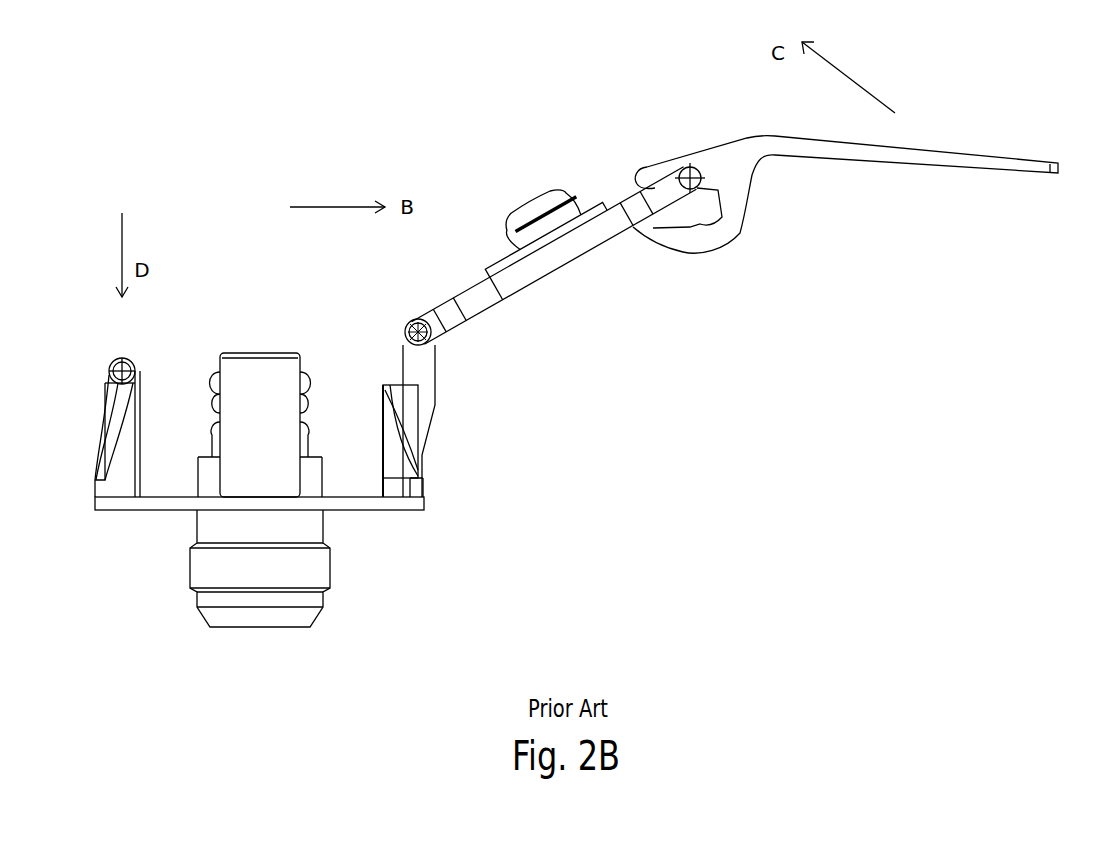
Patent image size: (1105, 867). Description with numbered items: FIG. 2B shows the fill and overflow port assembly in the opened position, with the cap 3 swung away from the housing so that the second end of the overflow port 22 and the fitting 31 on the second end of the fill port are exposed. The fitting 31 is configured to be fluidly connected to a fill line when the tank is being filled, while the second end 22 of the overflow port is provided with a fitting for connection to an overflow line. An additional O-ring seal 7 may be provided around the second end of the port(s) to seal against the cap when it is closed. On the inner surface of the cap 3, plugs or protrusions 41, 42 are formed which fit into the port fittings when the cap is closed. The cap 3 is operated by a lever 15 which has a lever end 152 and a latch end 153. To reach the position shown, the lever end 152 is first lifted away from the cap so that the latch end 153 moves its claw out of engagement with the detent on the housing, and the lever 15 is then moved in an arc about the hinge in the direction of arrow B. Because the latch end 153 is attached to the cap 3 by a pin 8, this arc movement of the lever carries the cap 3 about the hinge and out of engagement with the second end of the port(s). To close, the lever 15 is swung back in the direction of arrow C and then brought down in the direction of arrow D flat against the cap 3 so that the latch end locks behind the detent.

The cap 3 is at (548, 275).
The O-ring seal 7 is at (322, 598).
The pin 8 is at (688, 172).
The lever 15 is at (846, 211).
The second end of the overflow port 22 is at (272, 378).
The fitting 31 is at (220, 373).
The plug or protrusion 41 is at (530, 210).
The plug or protrusion 42 is at (505, 260).
The lever end 152 is at (1050, 173).
The latch end 153 is at (677, 243).